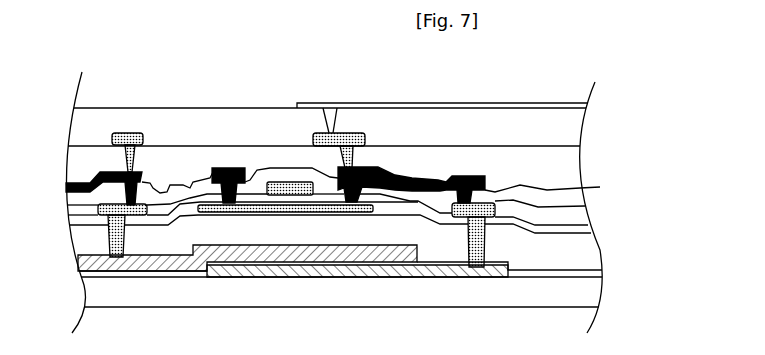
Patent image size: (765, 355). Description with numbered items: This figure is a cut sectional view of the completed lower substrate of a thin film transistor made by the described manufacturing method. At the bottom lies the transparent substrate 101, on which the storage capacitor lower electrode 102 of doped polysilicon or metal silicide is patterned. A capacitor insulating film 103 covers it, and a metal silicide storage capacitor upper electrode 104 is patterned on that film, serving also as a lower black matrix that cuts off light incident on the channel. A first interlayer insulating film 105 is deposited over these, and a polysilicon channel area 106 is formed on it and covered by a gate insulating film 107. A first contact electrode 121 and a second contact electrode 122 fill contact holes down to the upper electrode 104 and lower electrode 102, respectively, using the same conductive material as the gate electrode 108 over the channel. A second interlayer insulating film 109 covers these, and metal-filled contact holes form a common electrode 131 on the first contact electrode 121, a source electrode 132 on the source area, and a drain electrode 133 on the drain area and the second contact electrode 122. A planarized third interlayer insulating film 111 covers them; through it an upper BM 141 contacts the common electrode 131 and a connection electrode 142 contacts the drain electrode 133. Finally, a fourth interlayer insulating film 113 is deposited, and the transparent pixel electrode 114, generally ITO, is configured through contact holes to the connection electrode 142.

The transparent substrate 101 is at (583, 298).
The storage capacitor lower electrode 102 is at (565, 265).
The capacitor insulating film 103 is at (93, 272).
The storage capacitor upper electrode 104 is at (97, 259).
The first interlayer insulating film 105 is at (92, 244).
The channel area 106 is at (268, 210).
The gate insulating film 107 is at (85, 220).
The gate electrode 108 is at (269, 183).
The second interlayer insulating film 109 is at (577, 214).
The third interlayer insulating film 111 is at (560, 168).
The fourth interlayer insulating film 113 is at (568, 127).
The pixel electrode 114 is at (490, 103).
The first contact electrode 121 is at (85, 203).
The second contact electrode 122 is at (560, 192).
The common electrode 131 is at (67, 187).
The source electrode 132 is at (213, 167).
The drain electrode 133 is at (417, 177).
The upper BM 141 is at (122, 132).
The connection electrode 142 is at (313, 133).